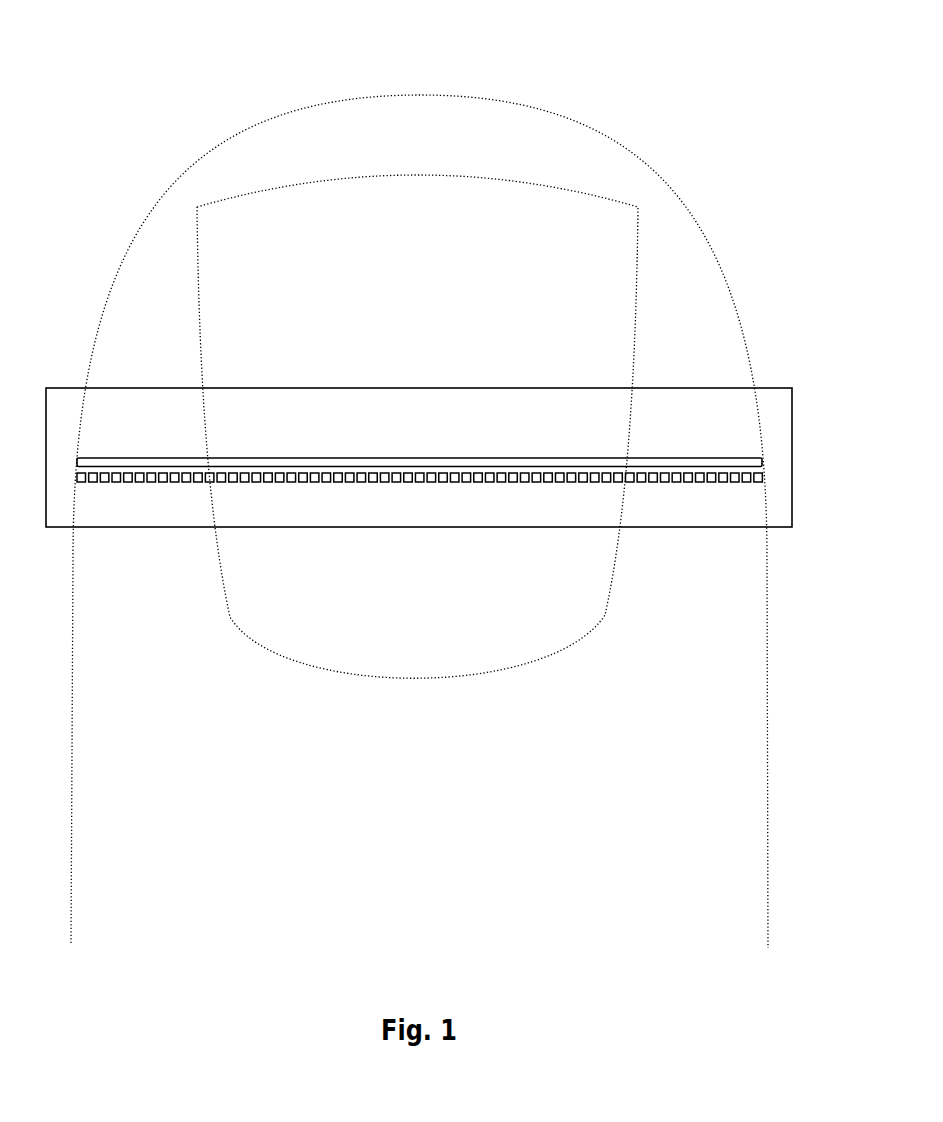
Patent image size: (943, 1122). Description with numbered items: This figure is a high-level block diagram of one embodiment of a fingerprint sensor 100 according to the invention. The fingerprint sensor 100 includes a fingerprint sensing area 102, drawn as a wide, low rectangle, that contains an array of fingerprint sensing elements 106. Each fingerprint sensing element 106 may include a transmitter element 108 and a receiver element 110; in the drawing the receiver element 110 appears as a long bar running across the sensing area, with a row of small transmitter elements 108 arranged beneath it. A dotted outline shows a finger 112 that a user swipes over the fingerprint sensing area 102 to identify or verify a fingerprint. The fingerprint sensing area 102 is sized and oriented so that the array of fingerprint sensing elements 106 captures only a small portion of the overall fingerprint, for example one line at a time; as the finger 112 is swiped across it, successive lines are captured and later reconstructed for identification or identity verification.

The fingerprint sensor 100 is at (255, 63).
The fingerprint sensing area 102 is at (420, 405).
The fingerprint sensing element 106 is at (770, 447).
The transmitter element 108 is at (361, 484).
The receiver element 110 is at (355, 462).
The finger 112 is at (218, 148).